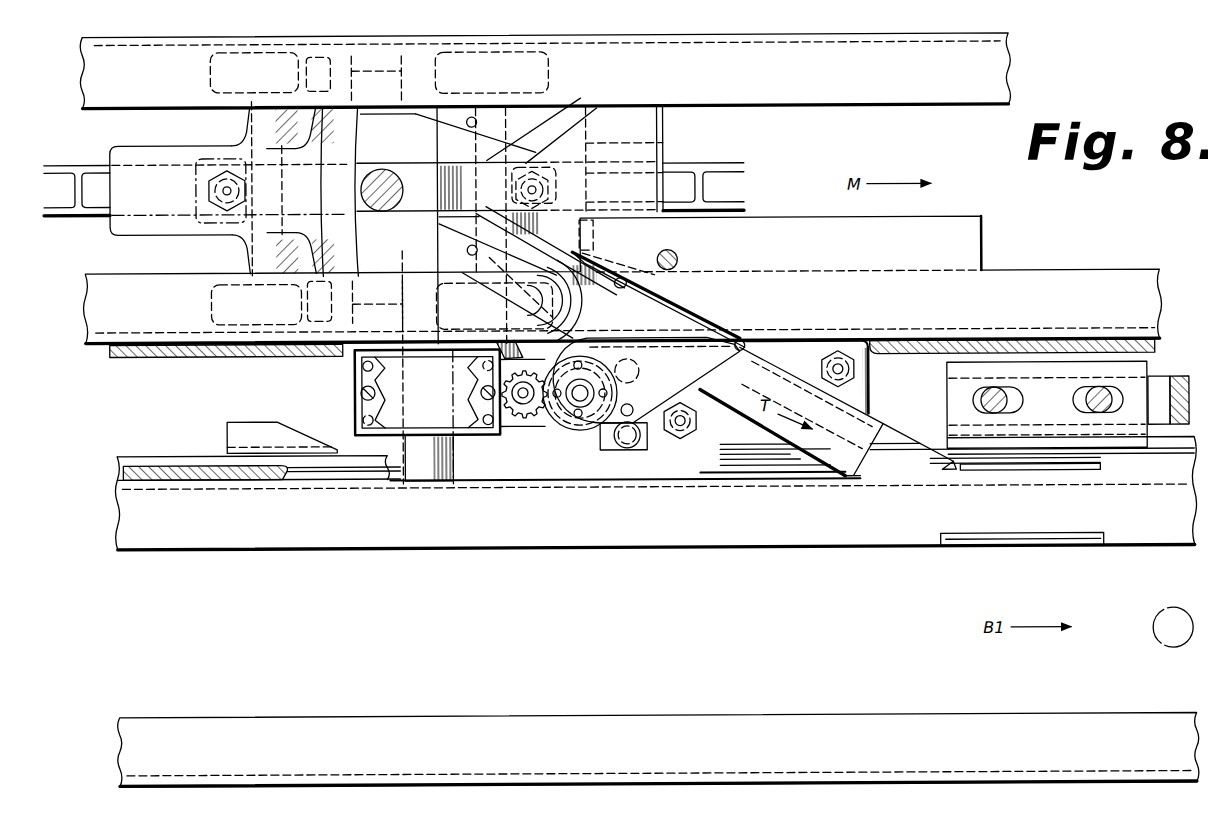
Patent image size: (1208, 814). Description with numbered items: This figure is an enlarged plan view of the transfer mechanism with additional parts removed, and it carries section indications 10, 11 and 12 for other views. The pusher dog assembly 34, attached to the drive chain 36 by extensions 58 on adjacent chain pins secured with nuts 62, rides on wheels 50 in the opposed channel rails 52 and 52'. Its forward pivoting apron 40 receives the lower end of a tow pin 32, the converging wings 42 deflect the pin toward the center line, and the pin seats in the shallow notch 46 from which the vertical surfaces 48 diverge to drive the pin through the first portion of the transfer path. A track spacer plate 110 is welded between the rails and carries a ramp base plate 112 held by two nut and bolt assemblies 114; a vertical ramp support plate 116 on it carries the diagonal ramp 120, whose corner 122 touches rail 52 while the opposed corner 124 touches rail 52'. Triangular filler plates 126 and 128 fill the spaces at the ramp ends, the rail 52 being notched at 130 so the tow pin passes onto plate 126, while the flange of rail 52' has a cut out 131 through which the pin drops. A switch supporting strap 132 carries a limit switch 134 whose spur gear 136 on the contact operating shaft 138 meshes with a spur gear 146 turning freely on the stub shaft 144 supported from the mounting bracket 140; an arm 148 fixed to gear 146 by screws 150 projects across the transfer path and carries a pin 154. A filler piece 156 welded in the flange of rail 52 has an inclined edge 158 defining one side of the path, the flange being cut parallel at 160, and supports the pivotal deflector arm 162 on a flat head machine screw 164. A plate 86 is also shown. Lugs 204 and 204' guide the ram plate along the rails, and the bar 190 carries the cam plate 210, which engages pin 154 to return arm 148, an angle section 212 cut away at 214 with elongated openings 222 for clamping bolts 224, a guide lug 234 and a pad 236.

The section line 10- 10 is at (557, 350).
The section line 11- 11 is at (205, 269).
The section line 12- 12 is at (306, 23).
The tow pin 32 is at (401, 199).
The pusher dog assembly 34 is at (195, 143).
The drive chain 36 is at (76, 162).
The pivoting apron 40 is at (660, 136).
The wings 42 is at (580, 97).
The shallow notch 46 is at (372, 169).
The vertical surface 48 is at (362, 114).
The wheels 50 is at (212, 71).
The inner rail 52 is at (605, 188).
The opposed inner rail 52' is at (657, 611).
The extensions 58 is at (247, 189).
The nuts 62 is at (208, 189).
The plate 86 is at (949, 216).
The track spacer plate 110 is at (616, 462).
The ramp base plate 112 is at (712, 446).
The nut and bolt assemblies 114 is at (840, 352).
The ramp support plate 116 is at (736, 411).
The ramp 120 is at (790, 377).
The corner 122 is at (745, 342).
The diagonally opposed corner 124 is at (843, 481).
The horizontal triangular plate 126 is at (690, 411).
The horizontal triangular plate 128 is at (903, 471).
The notch 130 is at (702, 321).
The cut out 131 is at (1090, 535).
The switch supporting strap 132 is at (453, 467).
The limit switch 134 is at (427, 368).
The spur gear 136 is at (523, 414).
The contact operating shaft 138 is at (485, 389).
The switch mounting bracket 140 is at (500, 420).
The stub shaft 144 is at (580, 408).
The spur gear 146 is at (560, 426).
The arm 148 is at (645, 337).
The screws 150 is at (578, 360).
The pin 154 is at (635, 408).
The filler piece 156 is at (968, 250).
The inclined edge 158 is at (620, 278).
The cut 160 is at (507, 300).
The deflector arm 162 is at (489, 183).
The flat head machine screw 164 is at (678, 255).
The bar 190 is at (327, 476).
The lug 204 is at (226, 365).
The lug 204' is at (205, 451).
The pin engaging cam plate 210 is at (282, 420).
The angle section 212 is at (1138, 371).
The cut away 214 is at (1168, 400).
The elongated openings 222 is at (1009, 409).
The clamping bolts 224 is at (1010, 391).
The guide lug 234 is at (1045, 347).
The pad 236 is at (1015, 474).